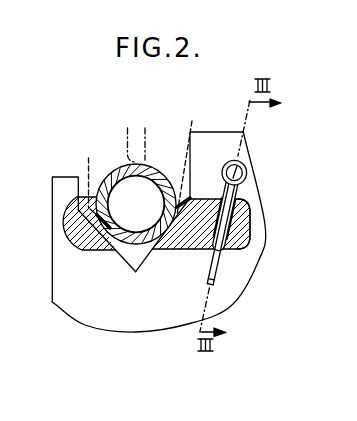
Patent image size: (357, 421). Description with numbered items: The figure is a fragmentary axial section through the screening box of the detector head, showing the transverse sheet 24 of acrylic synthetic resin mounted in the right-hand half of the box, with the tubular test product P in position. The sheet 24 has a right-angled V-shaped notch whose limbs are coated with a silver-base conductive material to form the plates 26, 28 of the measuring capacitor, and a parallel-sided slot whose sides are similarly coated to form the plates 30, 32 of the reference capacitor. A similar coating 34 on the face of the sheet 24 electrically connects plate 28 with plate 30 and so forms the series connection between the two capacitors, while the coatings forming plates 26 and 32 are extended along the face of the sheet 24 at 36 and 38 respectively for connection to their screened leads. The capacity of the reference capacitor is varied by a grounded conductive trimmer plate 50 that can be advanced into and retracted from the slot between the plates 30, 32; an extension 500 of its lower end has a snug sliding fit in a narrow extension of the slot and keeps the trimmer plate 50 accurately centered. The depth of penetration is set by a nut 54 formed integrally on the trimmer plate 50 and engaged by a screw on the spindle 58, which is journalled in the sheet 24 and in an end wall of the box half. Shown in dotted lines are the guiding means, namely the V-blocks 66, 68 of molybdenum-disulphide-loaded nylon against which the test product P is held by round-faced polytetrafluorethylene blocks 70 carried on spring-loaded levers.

The transverse sheet 24 is at (158, 232).
The measuring capacitor plate 26 is at (100, 240).
The measuring capacitor plate 28 is at (168, 240).
The reference capacitor plate 30 is at (248, 208).
The reference capacitor plate 32 is at (237, 230).
The conductive coating 34 is at (200, 215).
The coating extension 36 is at (83, 232).
The coating extension 38 is at (240, 250).
The trimmer plate 50 is at (243, 245).
The trimmer plate extension 500 is at (216, 282).
The nut 54 is at (245, 169).
The spindle 58 is at (247, 176).
The V-block 66 is at (76, 174).
The V-block 68 is at (206, 159).
The round-faced block 70 is at (143, 138).
The test product P is at (117, 167).